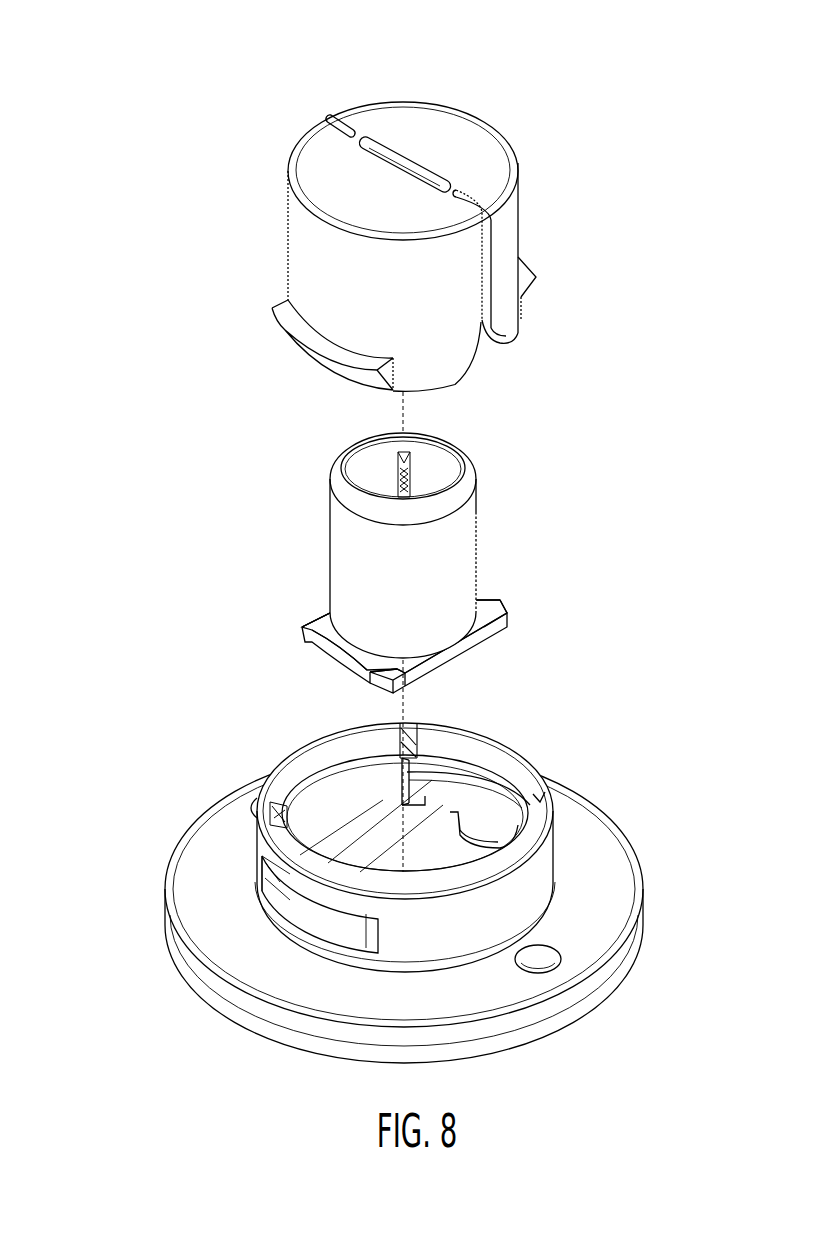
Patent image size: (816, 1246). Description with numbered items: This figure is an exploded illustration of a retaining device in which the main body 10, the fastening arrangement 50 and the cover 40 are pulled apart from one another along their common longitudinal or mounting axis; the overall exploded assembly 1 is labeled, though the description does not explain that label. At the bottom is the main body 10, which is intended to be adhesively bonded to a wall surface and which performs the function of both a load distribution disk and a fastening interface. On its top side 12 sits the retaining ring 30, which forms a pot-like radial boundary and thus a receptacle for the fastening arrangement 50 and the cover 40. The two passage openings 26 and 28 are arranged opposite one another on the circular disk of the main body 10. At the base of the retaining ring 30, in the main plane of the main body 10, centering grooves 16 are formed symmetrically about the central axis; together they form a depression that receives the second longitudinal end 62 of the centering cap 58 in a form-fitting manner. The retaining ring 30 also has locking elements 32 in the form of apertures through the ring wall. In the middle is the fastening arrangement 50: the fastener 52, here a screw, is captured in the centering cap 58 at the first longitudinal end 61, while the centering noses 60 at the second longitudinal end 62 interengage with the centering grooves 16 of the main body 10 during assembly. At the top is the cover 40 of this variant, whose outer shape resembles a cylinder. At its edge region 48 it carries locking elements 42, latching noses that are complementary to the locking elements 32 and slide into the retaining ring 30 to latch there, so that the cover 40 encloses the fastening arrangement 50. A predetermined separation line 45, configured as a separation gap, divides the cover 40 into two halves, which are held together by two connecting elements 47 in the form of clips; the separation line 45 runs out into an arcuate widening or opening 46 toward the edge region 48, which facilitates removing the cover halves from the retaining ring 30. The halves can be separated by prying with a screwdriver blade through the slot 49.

The knob assembly 1 is at (128, 223).
The main body 10 is at (128, 954).
The top side 12 is at (218, 928).
The centering grooves 16 is at (425, 832).
The passage opening 26 is at (542, 956).
The passage opening 28 is at (236, 815).
The retaining ring 30 is at (534, 878).
The locking elements 32 is at (300, 915).
The cover 40 is at (419, 213).
The locking elements 42 is at (550, 283).
The predetermined separation line 45 is at (348, 118).
The opening 46 is at (469, 379).
The connecting element 47 is at (438, 197).
The edge region 48 is at (525, 340).
The slot 49 is at (409, 144).
The fastening arrangement 50 is at (420, 527).
The fastener 52 is at (430, 471).
The centering cap 58 is at (456, 561).
The centering noses 60 is at (289, 627).
The first longitudinal end 61 is at (501, 450).
The second longitudinal end 62 is at (479, 659).